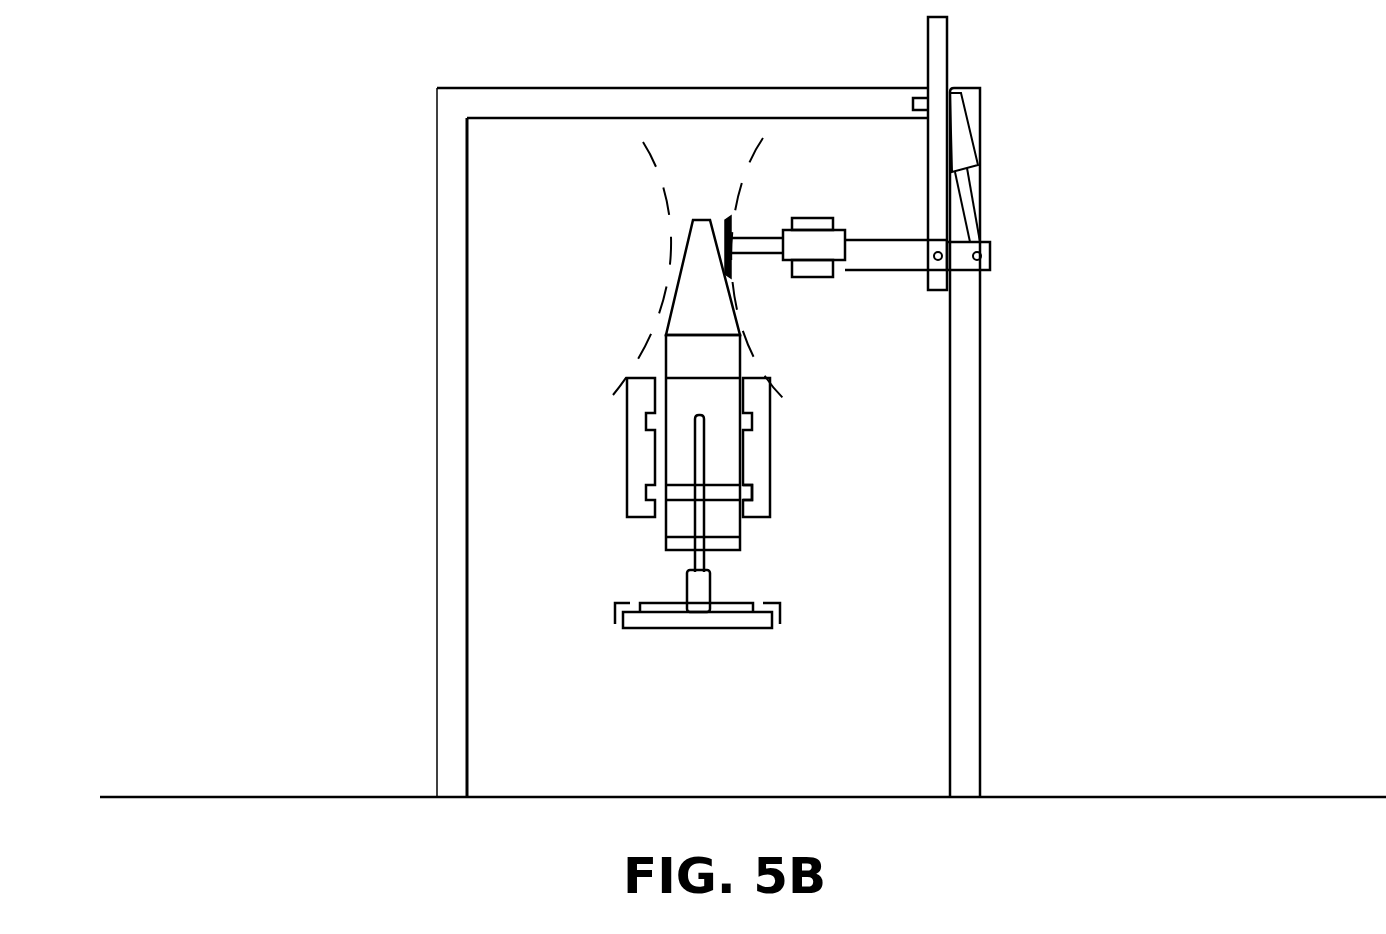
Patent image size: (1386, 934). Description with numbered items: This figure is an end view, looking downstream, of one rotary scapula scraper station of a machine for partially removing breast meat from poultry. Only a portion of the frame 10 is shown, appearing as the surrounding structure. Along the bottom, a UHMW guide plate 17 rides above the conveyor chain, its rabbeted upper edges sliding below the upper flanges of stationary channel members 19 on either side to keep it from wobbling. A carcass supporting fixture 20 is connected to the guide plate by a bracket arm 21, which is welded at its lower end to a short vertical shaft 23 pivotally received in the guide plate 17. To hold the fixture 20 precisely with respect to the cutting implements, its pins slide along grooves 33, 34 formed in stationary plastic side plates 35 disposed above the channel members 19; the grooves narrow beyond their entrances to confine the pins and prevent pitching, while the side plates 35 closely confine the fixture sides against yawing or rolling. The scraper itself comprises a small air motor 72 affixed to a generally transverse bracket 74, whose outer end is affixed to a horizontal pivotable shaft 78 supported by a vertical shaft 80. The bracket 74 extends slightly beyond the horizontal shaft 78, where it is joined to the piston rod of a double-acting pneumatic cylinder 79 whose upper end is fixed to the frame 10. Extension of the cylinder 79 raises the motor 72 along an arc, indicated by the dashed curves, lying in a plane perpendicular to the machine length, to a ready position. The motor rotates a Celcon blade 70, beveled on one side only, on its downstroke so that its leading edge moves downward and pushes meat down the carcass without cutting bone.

The frame 10 is at (448, 317).
The guide plate 17 is at (732, 625).
The channel member 19 is at (615, 618).
The carcass supporting fixture 20 is at (692, 292).
The bracket arm 21 is at (710, 457).
The vertical shaft 23 is at (712, 582).
The groove 33 is at (757, 420).
The groove 34 is at (757, 493).
The side plate 35 is at (640, 452).
The blade 70 is at (733, 228).
The air motor 72 is at (812, 222).
The bracket 74 is at (990, 262).
The horizontal pivotable shaft 78 is at (933, 262).
The double-acting pneumatic cylinder 79 is at (960, 170).
The vertical shaft 80 is at (945, 42).